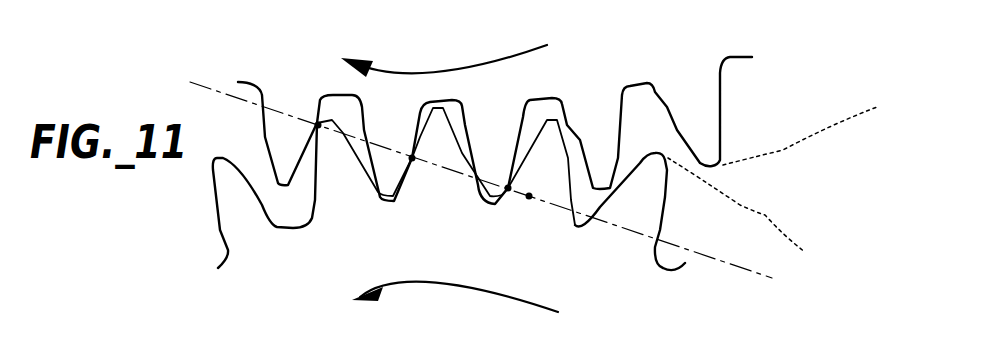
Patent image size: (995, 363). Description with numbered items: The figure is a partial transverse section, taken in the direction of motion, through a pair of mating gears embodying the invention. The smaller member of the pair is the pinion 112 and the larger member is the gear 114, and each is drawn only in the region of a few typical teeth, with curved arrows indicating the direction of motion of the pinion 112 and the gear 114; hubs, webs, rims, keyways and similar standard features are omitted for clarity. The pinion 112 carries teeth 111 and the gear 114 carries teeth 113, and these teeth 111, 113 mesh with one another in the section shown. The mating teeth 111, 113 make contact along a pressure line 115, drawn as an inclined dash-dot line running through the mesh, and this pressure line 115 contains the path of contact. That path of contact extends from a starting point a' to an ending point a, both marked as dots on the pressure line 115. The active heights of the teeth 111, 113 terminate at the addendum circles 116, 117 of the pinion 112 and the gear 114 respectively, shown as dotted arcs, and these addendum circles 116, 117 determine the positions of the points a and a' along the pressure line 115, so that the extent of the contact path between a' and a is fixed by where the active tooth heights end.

The teeth 111 is at (665, 212).
The pinion 112 is at (449, 241).
The teeth 113 is at (725, 112).
The gear 114 is at (488, 20).
The pressure line 115 is at (638, 233).
The addendum circle 116 is at (765, 215).
The addendum circle 117 is at (783, 150).
The ending point a is at (301, 90).
The starting point a' is at (515, 228).